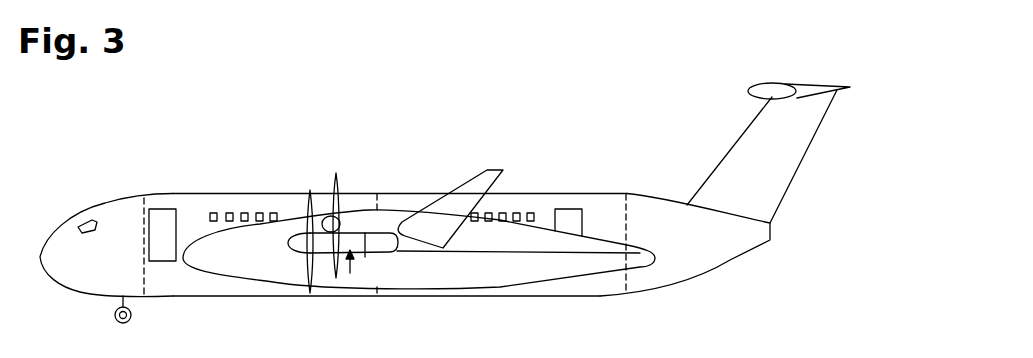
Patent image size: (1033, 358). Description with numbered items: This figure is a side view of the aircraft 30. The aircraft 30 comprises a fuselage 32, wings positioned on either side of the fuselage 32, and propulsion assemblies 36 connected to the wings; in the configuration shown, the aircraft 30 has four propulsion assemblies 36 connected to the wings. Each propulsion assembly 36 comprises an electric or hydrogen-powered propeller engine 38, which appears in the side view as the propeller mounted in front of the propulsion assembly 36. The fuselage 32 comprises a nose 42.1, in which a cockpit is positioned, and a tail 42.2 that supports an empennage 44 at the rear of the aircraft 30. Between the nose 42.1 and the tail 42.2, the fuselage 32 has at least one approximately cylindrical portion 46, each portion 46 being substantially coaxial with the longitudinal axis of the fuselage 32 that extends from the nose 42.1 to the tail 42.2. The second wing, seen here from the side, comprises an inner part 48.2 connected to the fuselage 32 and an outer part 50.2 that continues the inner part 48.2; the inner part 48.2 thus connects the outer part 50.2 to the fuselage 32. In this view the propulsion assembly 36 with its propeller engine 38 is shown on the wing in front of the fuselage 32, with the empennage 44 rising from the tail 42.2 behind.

The aircraft 30 is at (141, 122).
The fuselage 32 is at (201, 185).
The propulsion assembly 36 is at (364, 257).
The propeller engine 38 is at (315, 262).
The nose 42.1 is at (118, 228).
The tail 42.2 is at (695, 253).
The empennage 44 is at (752, 160).
The approximately cylindrical portion 46 is at (242, 194).
The inner part 48.2 is at (540, 232).
The outer part 50.2 is at (423, 190).